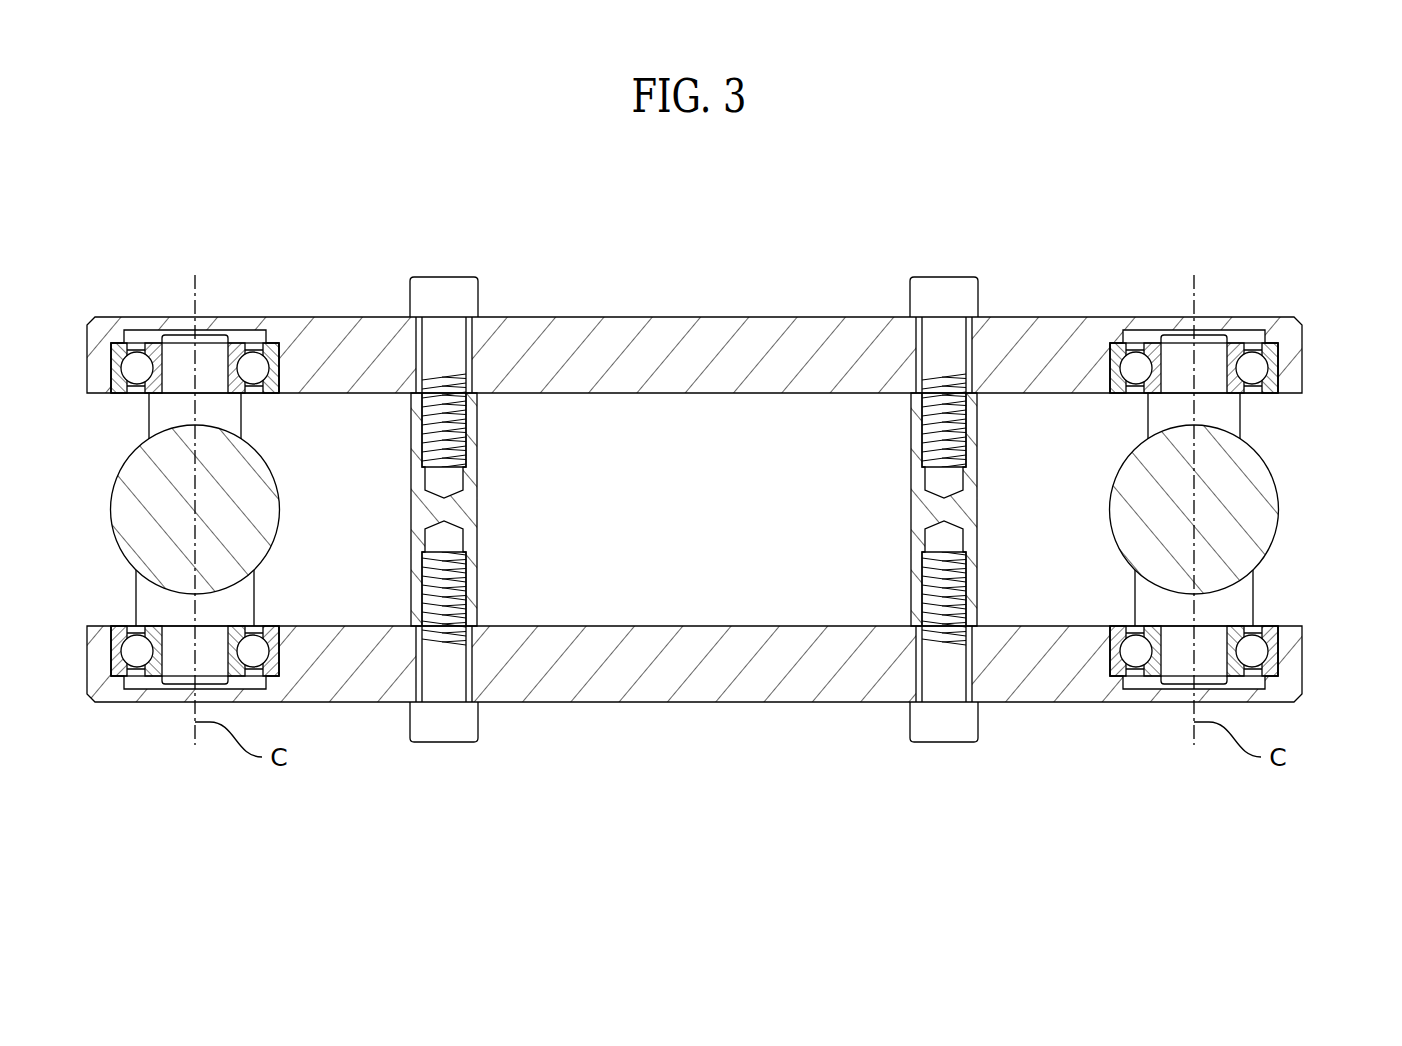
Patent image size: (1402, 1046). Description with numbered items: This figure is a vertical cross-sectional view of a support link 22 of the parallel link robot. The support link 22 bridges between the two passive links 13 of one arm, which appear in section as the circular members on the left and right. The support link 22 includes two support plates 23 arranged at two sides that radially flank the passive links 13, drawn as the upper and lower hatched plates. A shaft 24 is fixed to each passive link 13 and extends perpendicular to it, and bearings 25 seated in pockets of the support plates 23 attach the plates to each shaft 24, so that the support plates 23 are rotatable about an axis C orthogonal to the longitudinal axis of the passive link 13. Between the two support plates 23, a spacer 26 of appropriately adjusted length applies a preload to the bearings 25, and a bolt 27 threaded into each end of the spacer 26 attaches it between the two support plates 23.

The passive link 13 is at (1110, 497).
The support link 22 is at (848, 317).
The support plate 23 is at (742, 317).
The shaft 24 is at (149, 418).
The bearing 25 is at (111, 358).
The spacer 26 is at (478, 516).
The bolt 27 is at (448, 277).